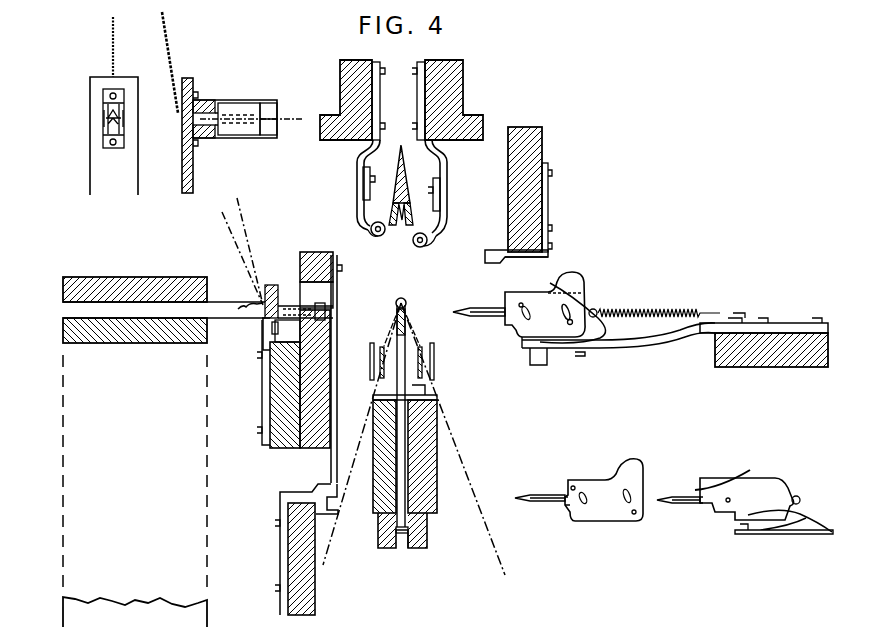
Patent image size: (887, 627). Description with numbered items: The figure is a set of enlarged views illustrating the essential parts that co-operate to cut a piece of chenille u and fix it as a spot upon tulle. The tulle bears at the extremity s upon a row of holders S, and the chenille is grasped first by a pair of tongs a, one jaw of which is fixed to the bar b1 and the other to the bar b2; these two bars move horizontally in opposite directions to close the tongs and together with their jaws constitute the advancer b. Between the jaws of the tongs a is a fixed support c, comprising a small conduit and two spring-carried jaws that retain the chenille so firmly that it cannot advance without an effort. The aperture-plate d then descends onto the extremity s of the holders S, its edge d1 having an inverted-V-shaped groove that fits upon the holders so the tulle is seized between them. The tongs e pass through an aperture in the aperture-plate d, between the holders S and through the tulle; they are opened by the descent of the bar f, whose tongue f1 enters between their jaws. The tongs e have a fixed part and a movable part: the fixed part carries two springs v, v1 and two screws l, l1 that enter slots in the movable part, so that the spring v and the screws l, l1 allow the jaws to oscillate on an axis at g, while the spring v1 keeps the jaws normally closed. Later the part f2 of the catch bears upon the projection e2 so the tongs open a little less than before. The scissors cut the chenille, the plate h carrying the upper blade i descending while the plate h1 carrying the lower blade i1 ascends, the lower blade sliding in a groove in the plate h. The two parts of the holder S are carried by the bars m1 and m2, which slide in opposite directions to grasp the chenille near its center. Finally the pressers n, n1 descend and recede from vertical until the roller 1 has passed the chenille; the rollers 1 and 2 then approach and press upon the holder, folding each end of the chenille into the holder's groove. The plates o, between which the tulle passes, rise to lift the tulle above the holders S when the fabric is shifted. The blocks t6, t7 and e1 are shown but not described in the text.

The chenille u is at (367, 312).
The fixed support c is at (248, 90).
The magnet pole block t6 is at (345, 86).
The magnet pole block t7 is at (455, 86).
The presser n is at (358, 183).
The presser n1 is at (441, 183).
The roller 1 is at (376, 238).
The roller 2 is at (424, 249).
The aperture-plate d is at (396, 173).
The edge of aperture-plate d1 is at (409, 214).
The bar f is at (530, 189).
The tongue f1 is at (506, 261).
The part of the catch f2 is at (526, 270).
The advancer b is at (154, 464).
The bar b1 is at (135, 281).
The bar b2 is at (135, 344).
The tongs a is at (242, 412).
The upper blade of the scissors i is at (324, 280).
The lower blade of the scissors i1 is at (340, 369).
The plate h is at (293, 379).
The plate h1 is at (306, 549).
The extremity of the holder s is at (414, 427).
The holder S is at (405, 387).
The plates o is at (403, 361).
The bar m1 is at (400, 474).
The bar m2 is at (422, 474).
The tongs e is at (500, 307).
The base block e1 is at (675, 338).
The projection e2 is at (579, 395).
The screw l is at (527, 313).
The screw l1 is at (562, 316).
The axis g is at (627, 510).
The spring v is at (747, 495).
The spring v1 is at (784, 519).